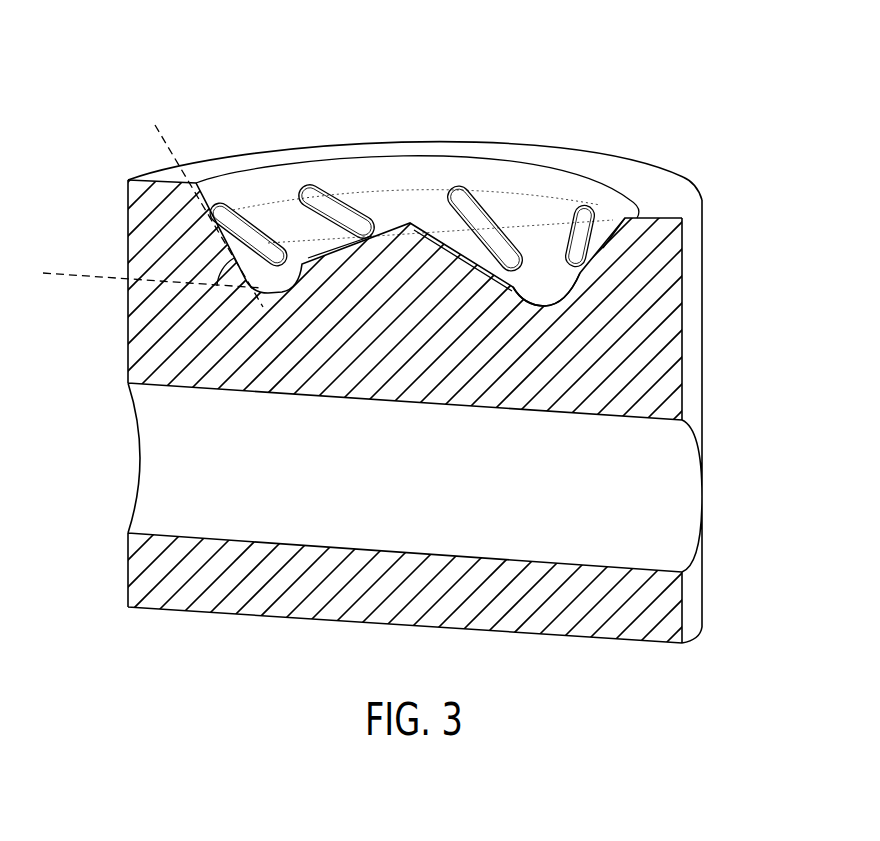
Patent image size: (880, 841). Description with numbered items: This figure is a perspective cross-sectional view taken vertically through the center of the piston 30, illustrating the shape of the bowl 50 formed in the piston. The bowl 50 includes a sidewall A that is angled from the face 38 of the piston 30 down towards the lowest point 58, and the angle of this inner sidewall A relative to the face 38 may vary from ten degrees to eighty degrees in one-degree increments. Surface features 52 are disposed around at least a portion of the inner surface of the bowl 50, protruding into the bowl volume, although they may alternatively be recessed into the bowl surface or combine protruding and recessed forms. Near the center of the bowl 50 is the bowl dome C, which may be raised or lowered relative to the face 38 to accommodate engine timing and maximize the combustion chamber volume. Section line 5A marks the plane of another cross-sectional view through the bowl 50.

The piston 30 is at (719, 347).
The face 38 is at (673, 204).
The bowl 50 is at (562, 193).
The surface features 52 is at (306, 192).
The lowest point 58 is at (547, 307).
The sidewall A is at (217, 207).
The bowl dome C is at (408, 222).
The section line 5A is at (412, 227).